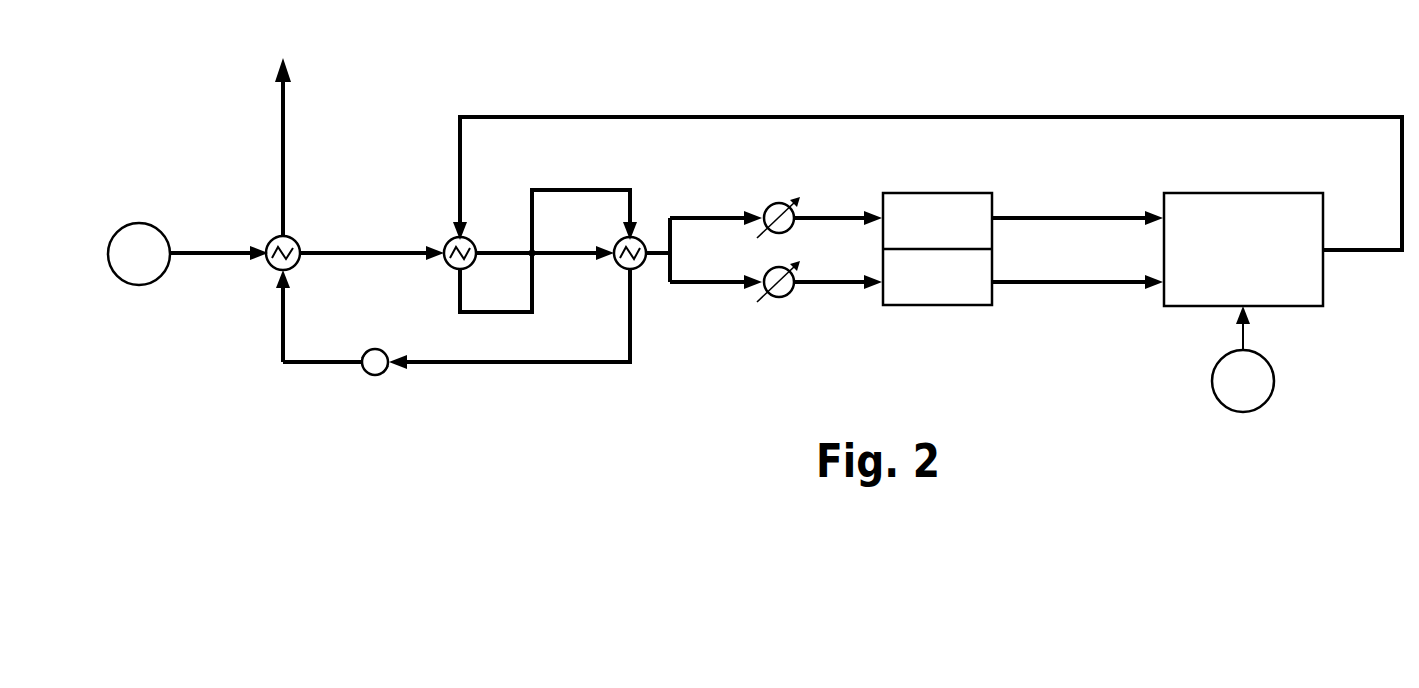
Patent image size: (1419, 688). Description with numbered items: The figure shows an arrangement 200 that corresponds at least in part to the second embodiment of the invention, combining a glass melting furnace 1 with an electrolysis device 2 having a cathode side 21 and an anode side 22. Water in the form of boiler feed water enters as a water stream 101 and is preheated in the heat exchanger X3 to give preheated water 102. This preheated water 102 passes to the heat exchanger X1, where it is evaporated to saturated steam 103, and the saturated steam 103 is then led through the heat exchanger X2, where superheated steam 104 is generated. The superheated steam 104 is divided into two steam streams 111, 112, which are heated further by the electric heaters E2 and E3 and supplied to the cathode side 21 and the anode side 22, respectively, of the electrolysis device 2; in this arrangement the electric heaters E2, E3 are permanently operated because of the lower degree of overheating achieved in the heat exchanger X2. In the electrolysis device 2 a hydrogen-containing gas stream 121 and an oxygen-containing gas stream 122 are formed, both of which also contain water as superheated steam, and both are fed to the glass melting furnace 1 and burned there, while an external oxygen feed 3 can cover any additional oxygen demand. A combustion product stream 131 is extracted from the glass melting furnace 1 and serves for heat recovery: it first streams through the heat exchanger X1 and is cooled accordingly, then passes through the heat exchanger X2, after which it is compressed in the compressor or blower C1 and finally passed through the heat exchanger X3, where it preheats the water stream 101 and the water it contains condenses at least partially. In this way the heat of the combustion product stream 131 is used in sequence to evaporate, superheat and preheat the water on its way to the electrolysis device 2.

The arrangement 200 is at (180, 83).
The water stream 101 is at (153, 272).
The heat exchanger X3 is at (276, 238).
The preheated water 102 is at (353, 240).
The heat exchanger X1 is at (478, 237).
The saturated steam 103 is at (587, 258).
The heat exchanger X2 is at (645, 240).
The superheated steam 104 is at (653, 258).
The compressor or blower C1 is at (376, 349).
The electric heater E2 is at (766, 205).
The electric heater E3 is at (780, 298).
The steam stream 111 is at (822, 210).
The steam stream 112 is at (822, 290).
The electrolysis device 2 is at (946, 263).
The cathode side 21 is at (975, 205).
The anode side 22 is at (975, 293).
The hydrogen-containing gas stream 121 is at (1072, 215).
The oxygen-containing gas stream 122 is at (1073, 283).
The glass melting furnace 1 is at (1180, 292).
The external oxygen feed 3 is at (1270, 381).
The combustion product stream 131 is at (1372, 254).